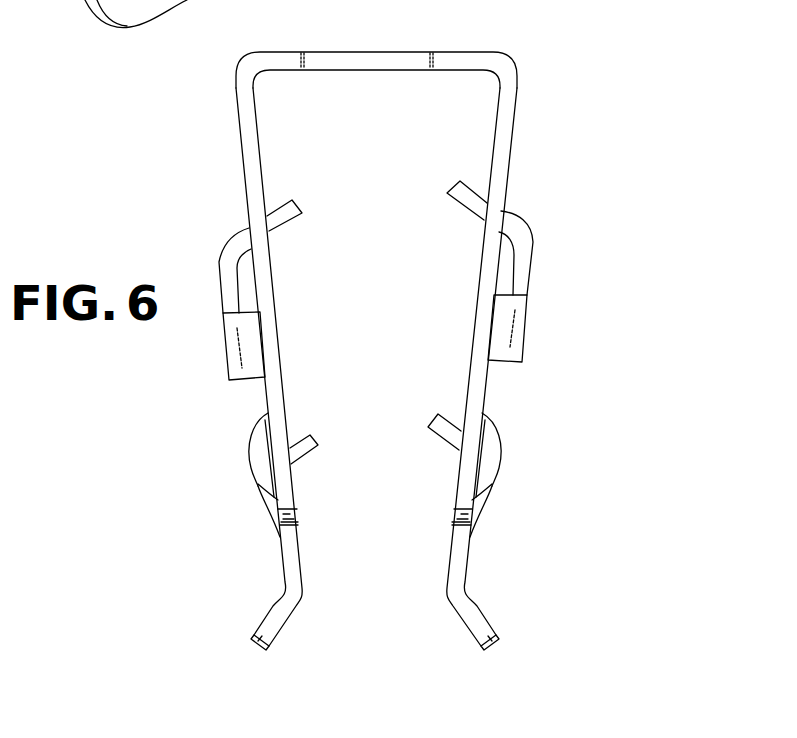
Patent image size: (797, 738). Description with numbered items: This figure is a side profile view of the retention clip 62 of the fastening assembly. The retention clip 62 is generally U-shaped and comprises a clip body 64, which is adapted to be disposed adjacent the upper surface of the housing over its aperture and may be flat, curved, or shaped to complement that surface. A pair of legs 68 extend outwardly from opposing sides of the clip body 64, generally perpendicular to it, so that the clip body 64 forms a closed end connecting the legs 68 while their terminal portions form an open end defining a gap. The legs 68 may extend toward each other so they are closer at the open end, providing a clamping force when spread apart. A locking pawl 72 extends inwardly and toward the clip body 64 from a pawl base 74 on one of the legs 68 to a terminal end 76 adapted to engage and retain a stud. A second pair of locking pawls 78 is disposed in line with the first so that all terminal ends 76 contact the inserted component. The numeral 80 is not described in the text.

The retention clip 62 is at (587, 108).
The clip body 64 is at (372, 62).
The legs 68 is at (465, 612).
The locking pawl 72 is at (230, 252).
The pawl base 74 is at (242, 368).
The terminal end 76 is at (453, 189).
The second pair of locking pawls 78 is at (447, 436).
The adjacent component 80 is at (50, 1).